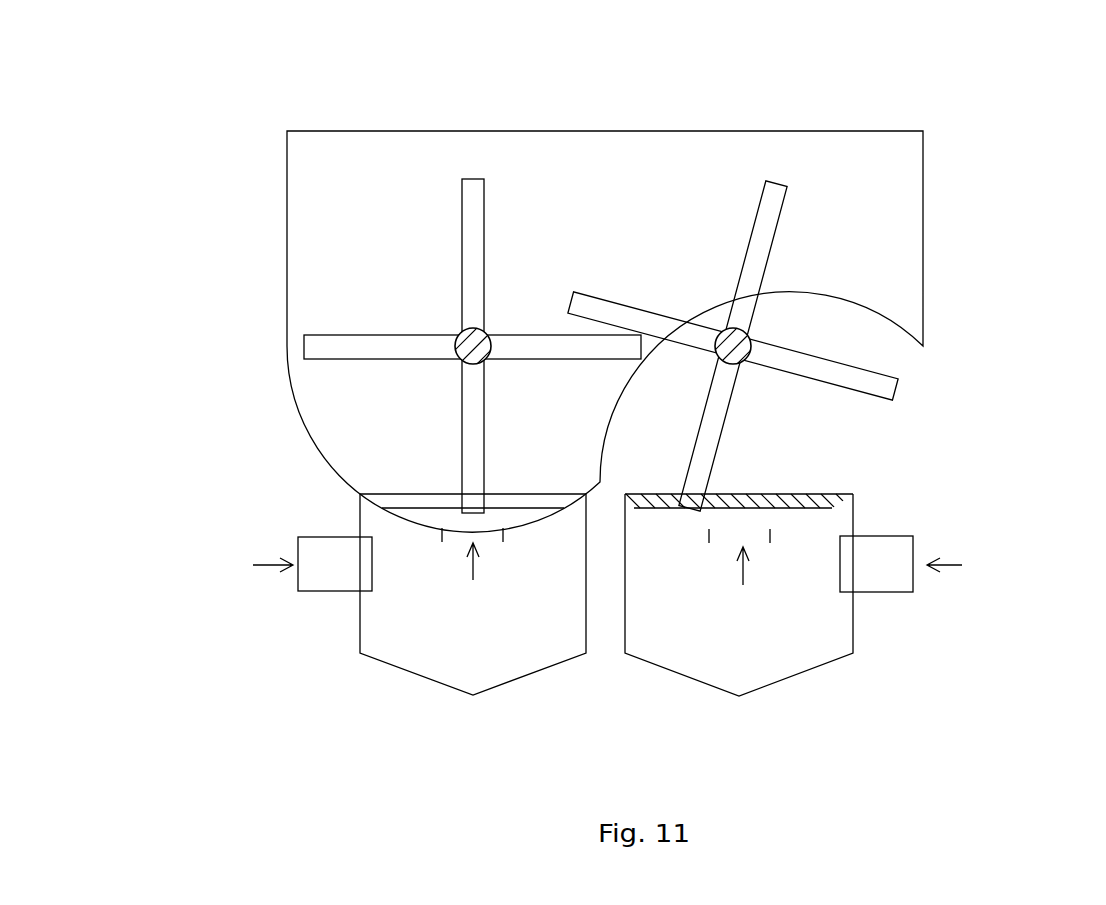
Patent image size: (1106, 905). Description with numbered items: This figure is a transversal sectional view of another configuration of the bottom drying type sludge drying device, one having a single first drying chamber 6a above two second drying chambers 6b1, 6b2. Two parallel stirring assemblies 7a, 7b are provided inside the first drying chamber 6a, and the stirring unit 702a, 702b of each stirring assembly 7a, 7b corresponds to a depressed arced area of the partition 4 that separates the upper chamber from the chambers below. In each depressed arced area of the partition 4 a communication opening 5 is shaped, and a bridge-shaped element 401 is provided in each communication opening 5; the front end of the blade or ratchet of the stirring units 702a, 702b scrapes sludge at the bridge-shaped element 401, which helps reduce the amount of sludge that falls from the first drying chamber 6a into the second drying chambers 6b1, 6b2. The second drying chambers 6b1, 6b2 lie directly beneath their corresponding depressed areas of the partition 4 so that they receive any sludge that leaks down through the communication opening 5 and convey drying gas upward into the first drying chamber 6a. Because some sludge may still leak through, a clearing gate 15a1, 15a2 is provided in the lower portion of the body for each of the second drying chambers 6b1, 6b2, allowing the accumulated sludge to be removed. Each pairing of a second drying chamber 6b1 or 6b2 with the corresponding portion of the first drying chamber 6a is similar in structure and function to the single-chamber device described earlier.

The first drying chamber 6a is at (635, 195).
The stirring assembly 7b is at (403, 320).
The stirring unit 702b is at (345, 320).
The stirring assembly 7a is at (811, 322).
The stirring unit 702a is at (855, 343).
The bridge-shaped element 401 is at (410, 500).
The partition 4 is at (423, 530).
The communication opening 5 is at (730, 535).
The second drying chamber 6b1 is at (398, 637).
The second drying chamber 6b2 is at (822, 607).
The clearing gate 15a1 is at (320, 548).
The clearing gate 15a2 is at (902, 545).